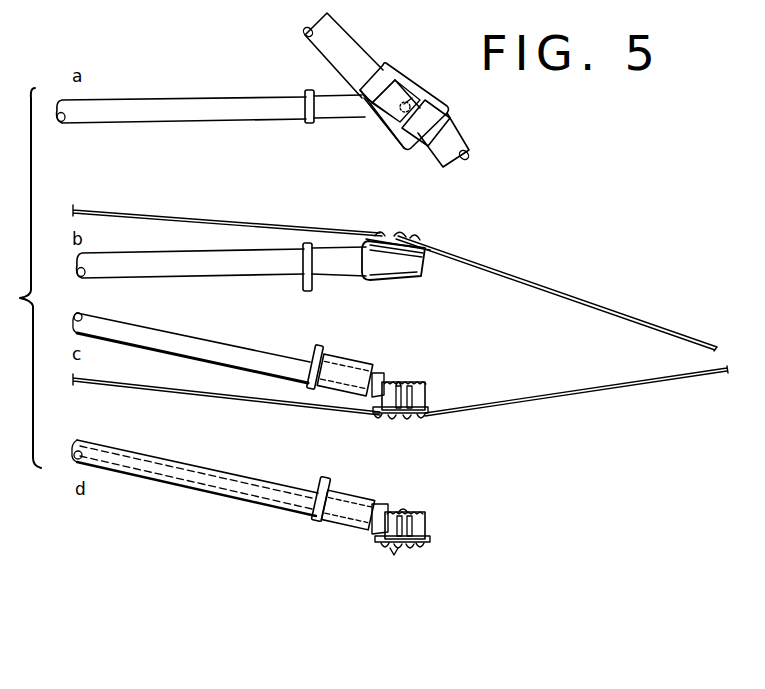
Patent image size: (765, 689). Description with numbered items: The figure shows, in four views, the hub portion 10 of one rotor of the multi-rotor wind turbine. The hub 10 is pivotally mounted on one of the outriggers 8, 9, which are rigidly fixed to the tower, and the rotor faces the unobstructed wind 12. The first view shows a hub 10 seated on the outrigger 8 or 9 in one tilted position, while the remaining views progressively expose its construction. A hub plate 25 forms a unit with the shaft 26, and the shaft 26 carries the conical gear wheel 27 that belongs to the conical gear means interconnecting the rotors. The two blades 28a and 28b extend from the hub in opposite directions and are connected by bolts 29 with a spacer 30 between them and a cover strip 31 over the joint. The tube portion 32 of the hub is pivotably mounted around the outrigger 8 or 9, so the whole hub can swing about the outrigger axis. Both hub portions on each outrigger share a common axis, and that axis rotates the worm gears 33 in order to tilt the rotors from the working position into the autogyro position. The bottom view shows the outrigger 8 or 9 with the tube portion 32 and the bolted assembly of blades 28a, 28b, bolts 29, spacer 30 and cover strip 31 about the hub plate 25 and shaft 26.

The hub 10 is at (390, 133).
The outrigger 8 is at (191, 341).
The outrigger 9 is at (238, 344).
The unobstructed wind 12 is at (251, 491).
The hub plate 25 is at (427, 410).
The shaft 26 is at (423, 385).
The conical gear wheel 27 is at (378, 375).
The blade 28a is at (513, 399).
The blade 28b is at (228, 402).
The bolts 29 is at (417, 548).
The spacer 30 is at (400, 418).
The cover strip 31 is at (425, 417).
The tube portion 32 is at (362, 368).
The worm gears 33 is at (300, 360).